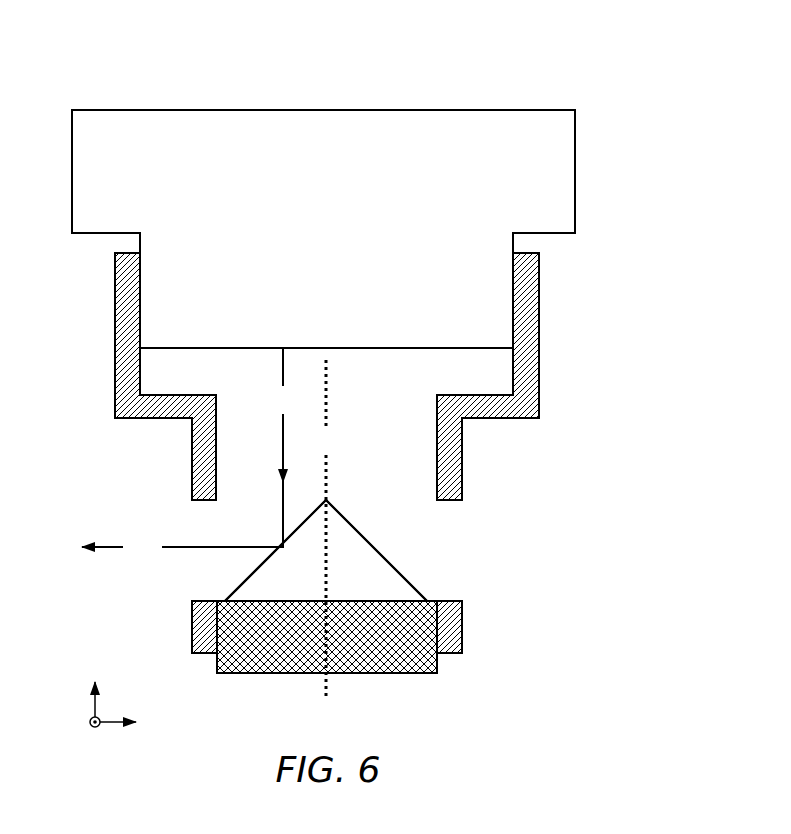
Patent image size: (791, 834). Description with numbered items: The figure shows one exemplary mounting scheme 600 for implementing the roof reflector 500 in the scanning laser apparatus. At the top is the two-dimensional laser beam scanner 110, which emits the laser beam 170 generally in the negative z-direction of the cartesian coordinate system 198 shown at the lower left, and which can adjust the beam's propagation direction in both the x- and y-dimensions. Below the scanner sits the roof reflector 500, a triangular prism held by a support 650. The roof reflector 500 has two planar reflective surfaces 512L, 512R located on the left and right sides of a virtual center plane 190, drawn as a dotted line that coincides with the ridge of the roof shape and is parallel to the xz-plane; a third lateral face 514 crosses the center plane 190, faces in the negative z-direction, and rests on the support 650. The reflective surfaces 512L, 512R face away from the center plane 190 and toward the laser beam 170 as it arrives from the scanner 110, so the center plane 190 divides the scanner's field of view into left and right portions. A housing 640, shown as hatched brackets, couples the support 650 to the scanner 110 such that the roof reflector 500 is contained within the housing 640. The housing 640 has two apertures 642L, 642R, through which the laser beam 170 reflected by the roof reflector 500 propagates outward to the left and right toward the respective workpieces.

The mounting scheme 600 is at (502, 68).
The 2D laser beam scanner 110 is at (323, 229).
The housing 640 is at (114, 309).
The aperture 642L is at (188, 529).
The aperture 642R is at (462, 551).
The laser beam 170 is at (191, 452).
The virtual center plane 190 is at (325, 530).
The roof reflector 500 is at (326, 550).
The reflective surface 512L is at (241, 578).
The reflective surface 512R is at (372, 538).
The support 650 is at (327, 637).
The third lateral face 514 is at (362, 606).
The cartesian coordinate system 198 is at (73, 712).